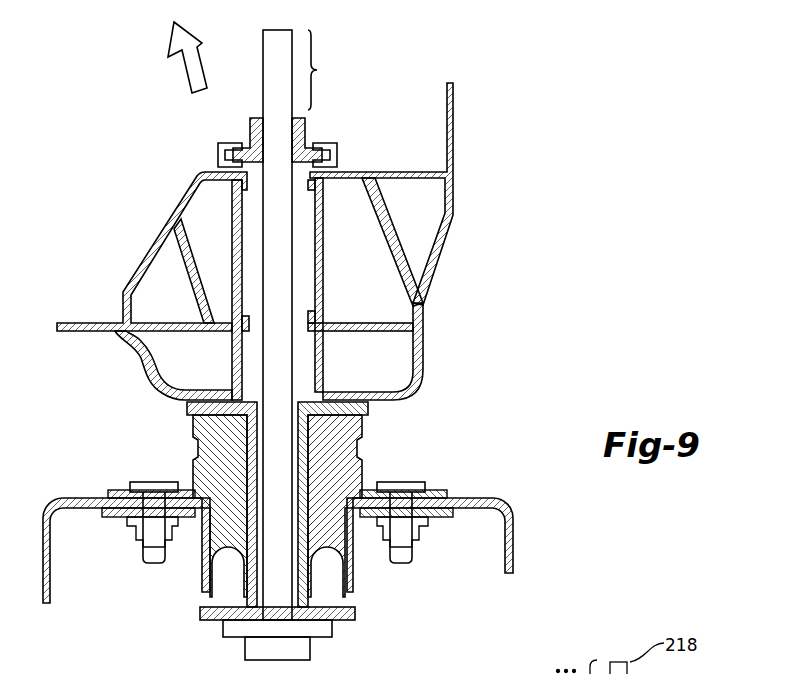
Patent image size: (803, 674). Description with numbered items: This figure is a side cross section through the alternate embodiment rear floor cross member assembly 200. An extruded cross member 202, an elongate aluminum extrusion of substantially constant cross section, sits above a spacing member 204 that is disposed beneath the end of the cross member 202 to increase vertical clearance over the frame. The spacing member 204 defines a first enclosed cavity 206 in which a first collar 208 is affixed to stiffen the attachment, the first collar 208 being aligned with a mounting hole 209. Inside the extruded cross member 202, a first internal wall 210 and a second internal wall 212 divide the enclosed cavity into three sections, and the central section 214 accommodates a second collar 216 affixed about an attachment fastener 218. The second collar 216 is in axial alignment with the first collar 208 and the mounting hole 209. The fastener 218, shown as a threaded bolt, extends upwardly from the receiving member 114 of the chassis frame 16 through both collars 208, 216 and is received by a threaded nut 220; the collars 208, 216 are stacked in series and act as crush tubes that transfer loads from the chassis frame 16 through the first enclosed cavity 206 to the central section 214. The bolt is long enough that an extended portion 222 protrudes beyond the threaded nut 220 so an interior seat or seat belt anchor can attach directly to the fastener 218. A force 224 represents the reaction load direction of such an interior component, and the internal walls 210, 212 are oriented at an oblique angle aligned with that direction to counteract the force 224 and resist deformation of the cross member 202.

The chassis frame 16 is at (507, 507).
The receiving member 114 is at (375, 413).
The rear floor cross member assembly 200 is at (508, 190).
The extruded cross member 202 is at (174, 205).
The spacing member 204 is at (424, 357).
The first enclosed cavity 206 is at (170, 358).
The first collar 208 is at (322, 368).
The mounting hole 209 is at (262, 322).
The first internal wall 210 is at (394, 232).
The second internal wall 212 is at (175, 261).
The central section 214 is at (388, 293).
The second collar 216 is at (322, 284).
The attachment fastener 218 is at (262, 42).
The threaded nut 220 is at (307, 120).
The extended portion 222 is at (331, 70).
The force 224 is at (182, 72).